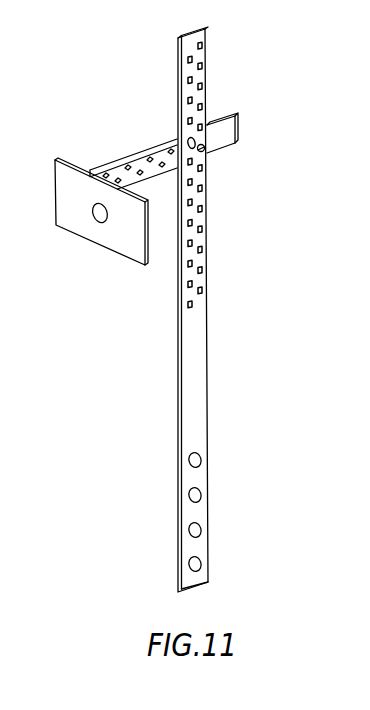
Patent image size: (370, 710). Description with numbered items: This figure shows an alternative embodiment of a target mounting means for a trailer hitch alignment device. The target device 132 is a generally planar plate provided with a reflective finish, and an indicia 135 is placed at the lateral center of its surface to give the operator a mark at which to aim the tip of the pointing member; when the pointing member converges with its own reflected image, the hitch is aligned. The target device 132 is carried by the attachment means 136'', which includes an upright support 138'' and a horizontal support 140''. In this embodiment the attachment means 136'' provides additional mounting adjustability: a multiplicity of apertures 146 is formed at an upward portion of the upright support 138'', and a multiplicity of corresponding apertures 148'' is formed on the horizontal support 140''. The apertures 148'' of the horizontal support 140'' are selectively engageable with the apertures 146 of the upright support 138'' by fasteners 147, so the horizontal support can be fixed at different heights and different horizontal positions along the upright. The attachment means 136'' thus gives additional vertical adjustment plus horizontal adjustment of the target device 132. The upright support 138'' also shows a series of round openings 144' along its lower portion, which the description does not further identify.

The target device 132 is at (73, 178).
The indicia 135 is at (102, 224).
The apertures 148'' is at (133, 129).
The horizontal support 140'' is at (248, 89).
The fasteners 147 is at (203, 151).
The apertures 146 is at (203, 190).
The attachment means 136'' is at (237, 309).
The upright support 138'' is at (239, 313).
The round apertures 144' is at (241, 497).